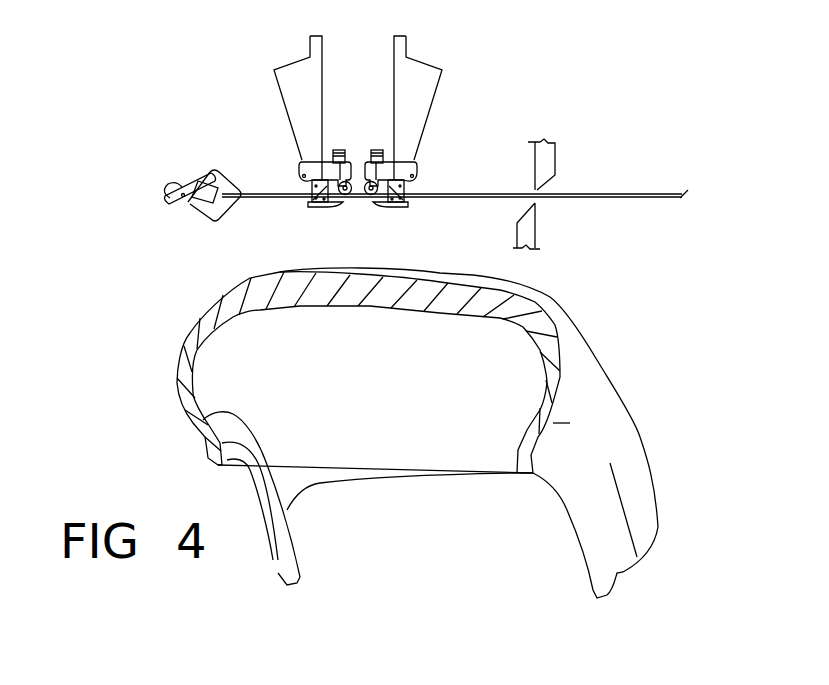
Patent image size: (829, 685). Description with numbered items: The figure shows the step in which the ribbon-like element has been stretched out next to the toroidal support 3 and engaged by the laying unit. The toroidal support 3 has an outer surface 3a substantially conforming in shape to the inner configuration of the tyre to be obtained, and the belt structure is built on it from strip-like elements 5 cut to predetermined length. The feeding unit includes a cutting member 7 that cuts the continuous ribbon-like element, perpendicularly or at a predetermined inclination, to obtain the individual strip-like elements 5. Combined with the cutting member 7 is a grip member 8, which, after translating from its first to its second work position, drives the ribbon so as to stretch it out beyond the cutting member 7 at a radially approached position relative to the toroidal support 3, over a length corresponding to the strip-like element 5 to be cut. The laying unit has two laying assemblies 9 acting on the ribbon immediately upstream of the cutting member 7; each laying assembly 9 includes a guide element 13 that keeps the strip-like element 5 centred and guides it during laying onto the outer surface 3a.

The toroidal support 3 is at (592, 333).
The outer surface 3a is at (452, 277).
The strip-like element 5 is at (270, 192).
The cutting member 7 is at (547, 158).
The grip member 8 is at (197, 178).
The laying assembly 9 is at (356, 138).
The guide element 13 is at (324, 214).